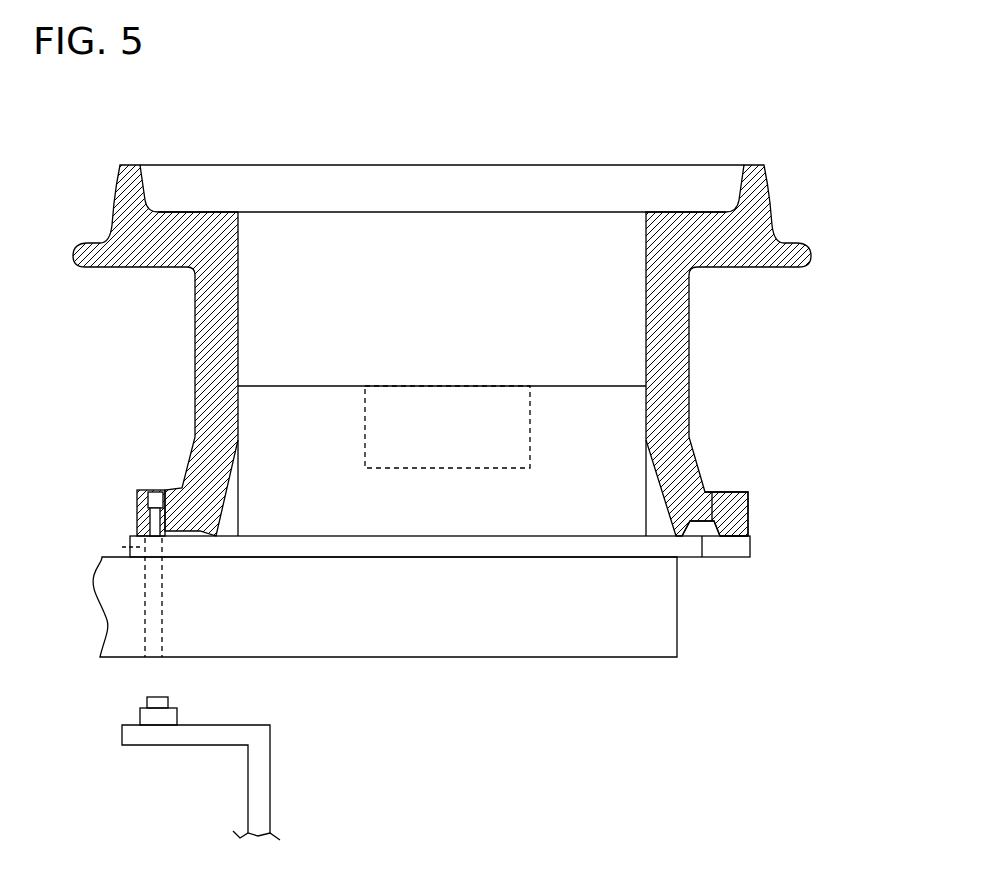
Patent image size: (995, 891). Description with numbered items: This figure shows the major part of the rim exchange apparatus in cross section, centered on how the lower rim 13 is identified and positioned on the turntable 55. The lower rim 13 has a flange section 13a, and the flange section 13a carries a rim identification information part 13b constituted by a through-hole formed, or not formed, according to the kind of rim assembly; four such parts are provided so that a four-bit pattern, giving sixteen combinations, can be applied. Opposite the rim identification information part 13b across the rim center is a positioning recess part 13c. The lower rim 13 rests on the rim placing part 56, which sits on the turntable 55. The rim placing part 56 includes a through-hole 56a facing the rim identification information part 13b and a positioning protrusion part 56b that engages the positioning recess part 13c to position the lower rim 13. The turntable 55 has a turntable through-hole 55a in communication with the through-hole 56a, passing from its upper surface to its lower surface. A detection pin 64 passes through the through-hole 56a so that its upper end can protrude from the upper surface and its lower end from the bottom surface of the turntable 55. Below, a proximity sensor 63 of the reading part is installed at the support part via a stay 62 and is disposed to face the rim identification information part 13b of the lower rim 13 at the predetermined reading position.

The lower rim 13 is at (252, 146).
The flange section 13a is at (750, 515).
The rim identification information part 13b is at (157, 488).
The positioning recess part 13c is at (728, 490).
The turntable 55 is at (588, 650).
The turntable through-hole 55a is at (140, 583).
The rim placing part 56 is at (485, 550).
The through-hole 56a is at (123, 545).
The positioning protrusion part 56b is at (700, 557).
The stay 62 is at (262, 795).
The proximity sensor 63 is at (135, 717).
The detection pin 64 is at (133, 520).